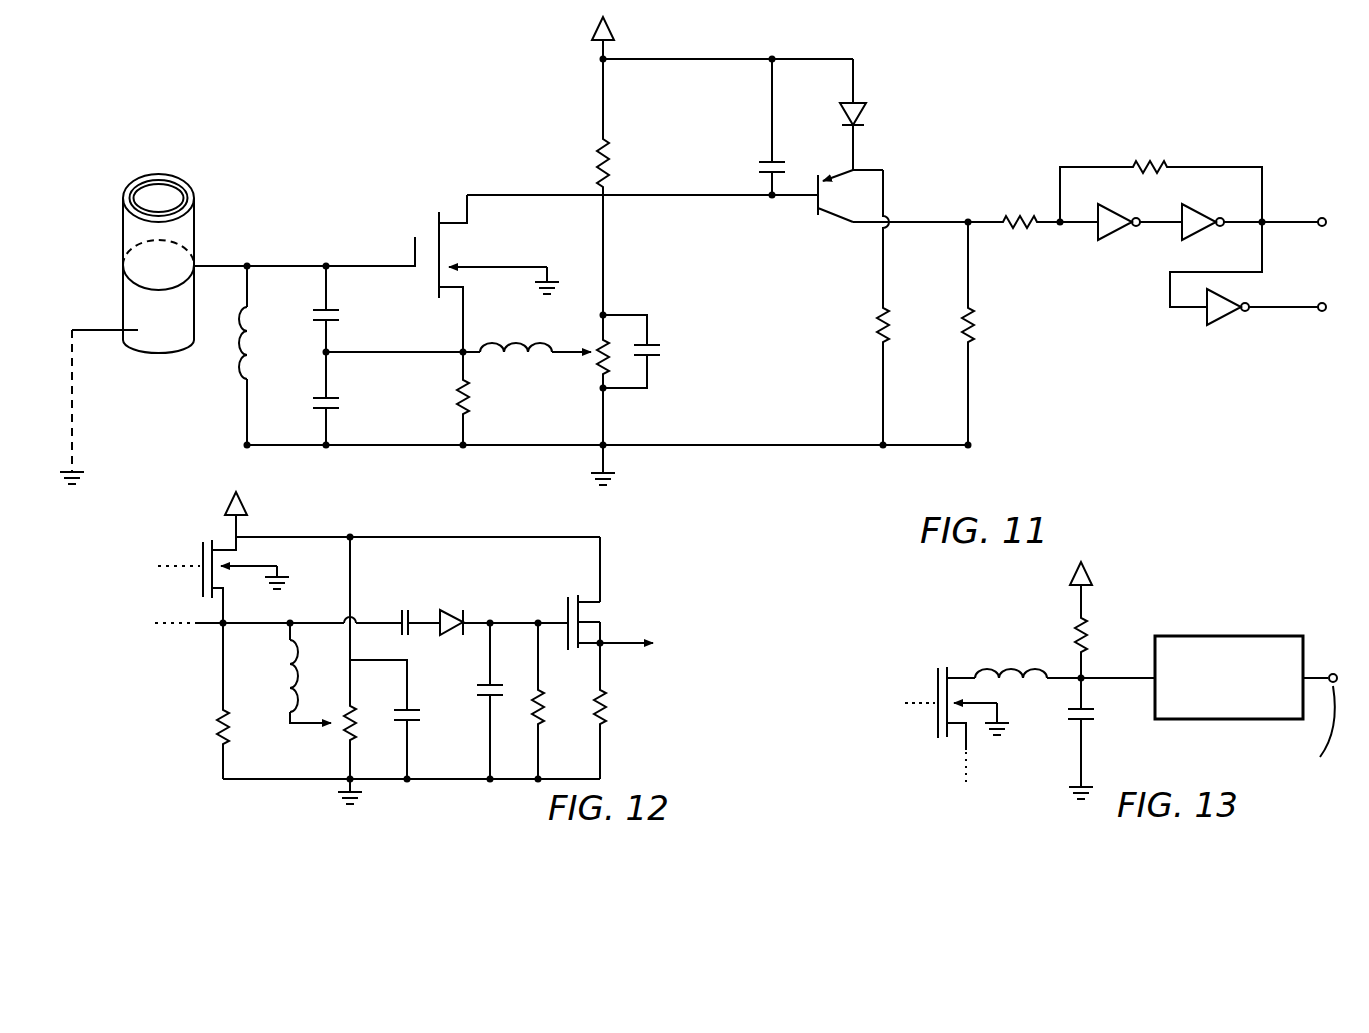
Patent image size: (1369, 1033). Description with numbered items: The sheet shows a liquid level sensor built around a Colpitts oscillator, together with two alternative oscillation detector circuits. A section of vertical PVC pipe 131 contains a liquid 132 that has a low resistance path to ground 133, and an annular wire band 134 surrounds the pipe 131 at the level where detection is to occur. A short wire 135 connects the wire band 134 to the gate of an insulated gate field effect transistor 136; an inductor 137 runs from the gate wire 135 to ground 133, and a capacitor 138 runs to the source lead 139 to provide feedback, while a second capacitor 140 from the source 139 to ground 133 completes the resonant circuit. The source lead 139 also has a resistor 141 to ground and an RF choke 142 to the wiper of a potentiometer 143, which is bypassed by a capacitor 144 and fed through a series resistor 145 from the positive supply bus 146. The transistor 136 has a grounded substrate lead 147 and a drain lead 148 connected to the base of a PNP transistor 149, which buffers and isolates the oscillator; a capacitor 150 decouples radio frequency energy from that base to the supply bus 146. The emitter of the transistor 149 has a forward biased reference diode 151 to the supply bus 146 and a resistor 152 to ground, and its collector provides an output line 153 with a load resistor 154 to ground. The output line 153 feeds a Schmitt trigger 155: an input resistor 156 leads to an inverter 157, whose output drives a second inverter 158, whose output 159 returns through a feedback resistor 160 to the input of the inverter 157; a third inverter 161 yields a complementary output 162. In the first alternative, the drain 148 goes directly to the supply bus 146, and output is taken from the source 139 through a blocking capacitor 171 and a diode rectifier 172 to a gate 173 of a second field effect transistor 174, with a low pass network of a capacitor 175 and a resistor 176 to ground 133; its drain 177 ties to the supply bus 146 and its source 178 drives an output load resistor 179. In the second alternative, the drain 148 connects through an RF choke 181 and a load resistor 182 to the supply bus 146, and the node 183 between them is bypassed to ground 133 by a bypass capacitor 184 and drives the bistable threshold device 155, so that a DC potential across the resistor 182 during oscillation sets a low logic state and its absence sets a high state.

In FIG. 11, the section of vertical PVC pipe 131 is at (195, 232).
In FIG. 11, the liquid 132 is at (135, 310).
In FIG. 11, the ground 133 is at (838, 445).
In FIG. 12, the ground 133 is at (405, 779).
In FIG. 13, the ground 133 is at (1081, 760).
In FIG. 11, the annular wire band 134 is at (196, 266).
In FIG. 11, the short wire 135 is at (226, 270).
In FIG. 11, the insulated gate field effect transistor 136 is at (448, 205).
In FIG. 12, the insulated gate field effect transistor 136 is at (200, 541).
In FIG. 13, the insulated gate field effect transistor 136 is at (925, 683).
In FIG. 11, the inductor 137 is at (250, 335).
In FIG. 11, the capacitor 138 is at (333, 308).
In FIG. 11, the source lead 139 is at (462, 316).
In FIG. 12, the source lead 139 is at (231, 623).
In FIG. 11, the second capacitor 140 is at (331, 398).
In FIG. 11, the resistor 141 is at (471, 396).
In FIG. 12, the resistor 141 is at (215, 720).
In FIG. 11, the RF choke 142 is at (530, 350).
In FIG. 12, the RF choke 142 is at (282, 672).
In FIG. 11, the potentiometer 143 is at (597, 368).
In FIG. 12, the potentiometer 143 is at (358, 722).
In FIG. 11, the capacitor 144 is at (649, 348).
In FIG. 12, the capacitor 144 is at (409, 710).
In FIG. 11, the series resistor 145 is at (608, 150).
In FIG. 11, the positive supply bus 146 is at (615, 27).
In FIG. 12, the positive supply bus 146 is at (240, 497).
In FIG. 13, the positive supply bus 146 is at (1086, 603).
In FIG. 11, the substrate lead 147 is at (527, 272).
In FIG. 11, the drain lead 148 is at (502, 197).
In FIG. 12, the drain lead 148 is at (242, 548).
In FIG. 13, the drain lead 148 is at (958, 677).
In FIG. 11, the PNP transistor 149 is at (810, 250).
In FIG. 11, the capacitor 150 is at (770, 161).
In FIG. 11, the reference voltage setting diode 151 is at (868, 108).
In FIG. 11, the resistor 152 is at (890, 318).
In FIG. 11, the output line 153 is at (915, 222).
In FIG. 11, the load resistor 154 is at (978, 318).
In FIG. 11, the Schmitt trigger 155 is at (1112, 244).
In FIG. 13, the Schmitt trigger 155 is at (1230, 636).
In FIG. 11, the input resistor 156 is at (1033, 217).
In FIG. 11, the inverter 157 is at (1108, 212).
In FIG. 11, the second inverter 158 is at (1205, 205).
In FIG. 11, the output 159 is at (1295, 220).
In FIG. 11, the feedback resistor 160 is at (1158, 166).
In FIG. 11, the third inverter 161 is at (1213, 323).
In FIG. 11, the output 162 is at (1294, 306).
In FIG. 12, the blocking capacitor 171 is at (398, 615).
In FIG. 12, the diode rectifier 172 is at (446, 610).
In FIG. 12, the gate 173 is at (505, 620).
In FIG. 12, the second field effect transistor 174 is at (565, 598).
In FIG. 12, the capacitor 175 is at (490, 686).
In FIG. 12, the resistor 176 is at (545, 693).
In FIG. 12, the drain 177 is at (603, 590).
In FIG. 12, the source 178 is at (605, 640).
In FIG. 12, the output load resistor 179 is at (608, 712).
In FIG. 13, the RF choke 181 is at (1022, 676).
In FIG. 13, the load resistor 182 is at (1093, 640).
In FIG. 13, the node 183 is at (1084, 677).
In FIG. 13, the bypass capacitor 184 is at (1087, 722).